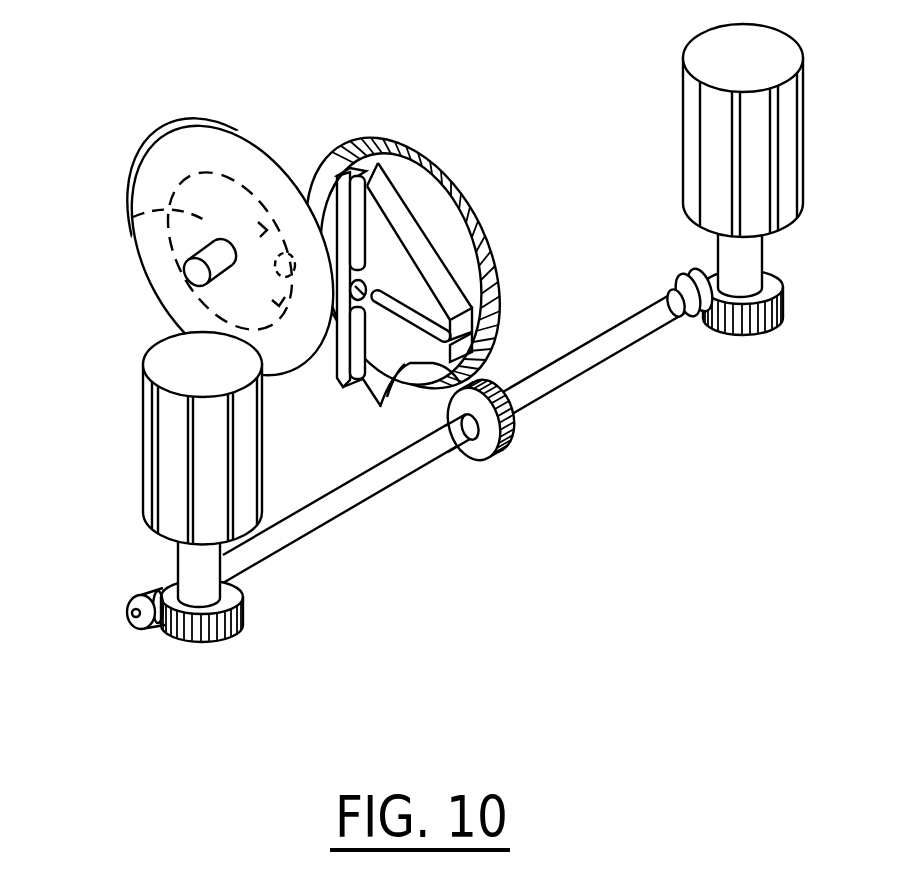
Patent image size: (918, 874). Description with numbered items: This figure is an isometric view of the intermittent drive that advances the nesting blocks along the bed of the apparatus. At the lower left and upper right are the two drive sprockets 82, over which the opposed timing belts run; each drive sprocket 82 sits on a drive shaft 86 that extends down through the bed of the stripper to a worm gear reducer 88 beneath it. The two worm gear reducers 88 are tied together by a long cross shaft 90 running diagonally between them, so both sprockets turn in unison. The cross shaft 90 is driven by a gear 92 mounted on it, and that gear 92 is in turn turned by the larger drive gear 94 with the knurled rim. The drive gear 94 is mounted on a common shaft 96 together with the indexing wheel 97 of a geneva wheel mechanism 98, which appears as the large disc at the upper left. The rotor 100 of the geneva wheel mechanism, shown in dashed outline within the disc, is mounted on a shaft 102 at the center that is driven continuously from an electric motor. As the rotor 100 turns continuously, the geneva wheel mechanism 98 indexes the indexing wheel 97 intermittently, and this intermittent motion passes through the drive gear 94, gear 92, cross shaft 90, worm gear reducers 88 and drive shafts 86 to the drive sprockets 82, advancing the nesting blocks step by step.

The drive sprocket 82 is at (177, 427).
The drive shaft 86 is at (177, 562).
The worm gear reducer 88 is at (170, 641).
The cross shaft 90 is at (336, 512).
The gear 92 is at (507, 434).
The drive gear 94 is at (496, 238).
The common shaft 96 is at (458, 225).
The indexing wheel 97 is at (340, 197).
The geneva wheel mechanism 98 is at (186, 99).
The rotor 100 is at (133, 217).
The shaft 102 is at (192, 268).